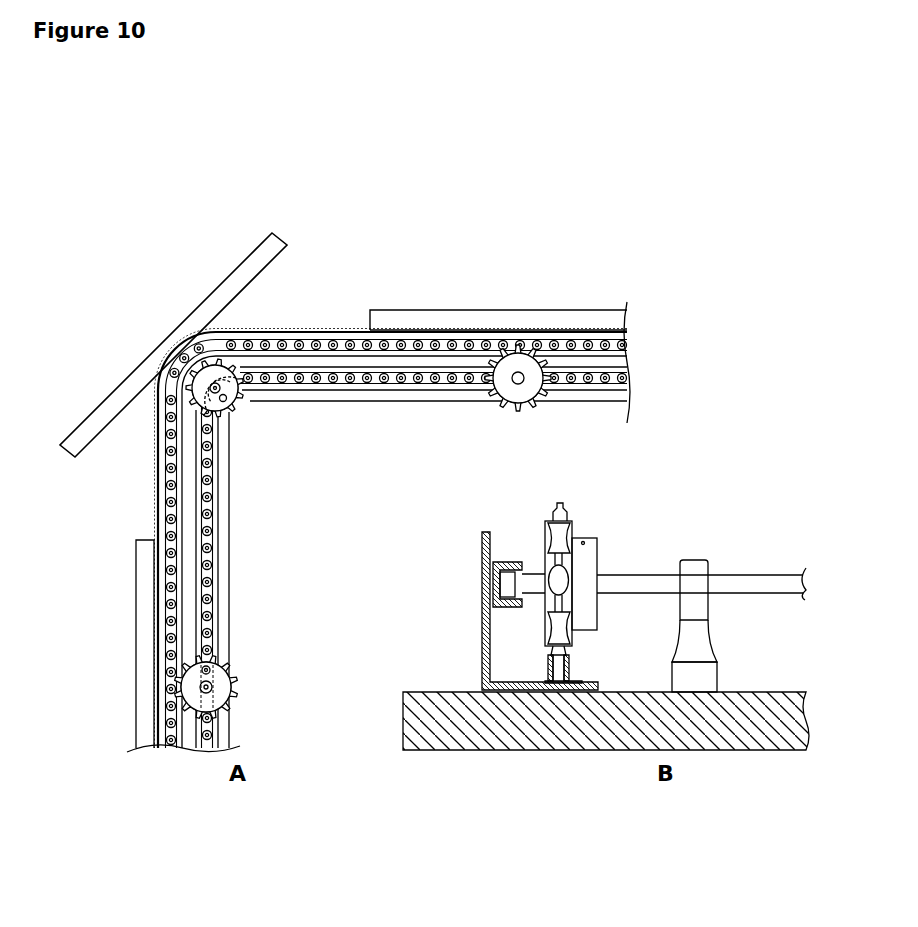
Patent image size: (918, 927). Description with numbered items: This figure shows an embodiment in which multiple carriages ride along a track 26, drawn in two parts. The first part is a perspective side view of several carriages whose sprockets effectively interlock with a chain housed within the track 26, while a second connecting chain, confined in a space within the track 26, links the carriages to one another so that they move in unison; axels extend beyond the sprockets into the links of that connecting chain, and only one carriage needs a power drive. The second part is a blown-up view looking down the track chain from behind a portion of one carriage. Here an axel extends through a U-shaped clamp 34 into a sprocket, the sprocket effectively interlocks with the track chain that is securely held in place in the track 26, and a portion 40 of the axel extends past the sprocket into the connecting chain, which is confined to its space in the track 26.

The track 26 is at (482, 540).
The U-shaped clamp 34 is at (718, 675).
The portion of axel 40 is at (533, 572).